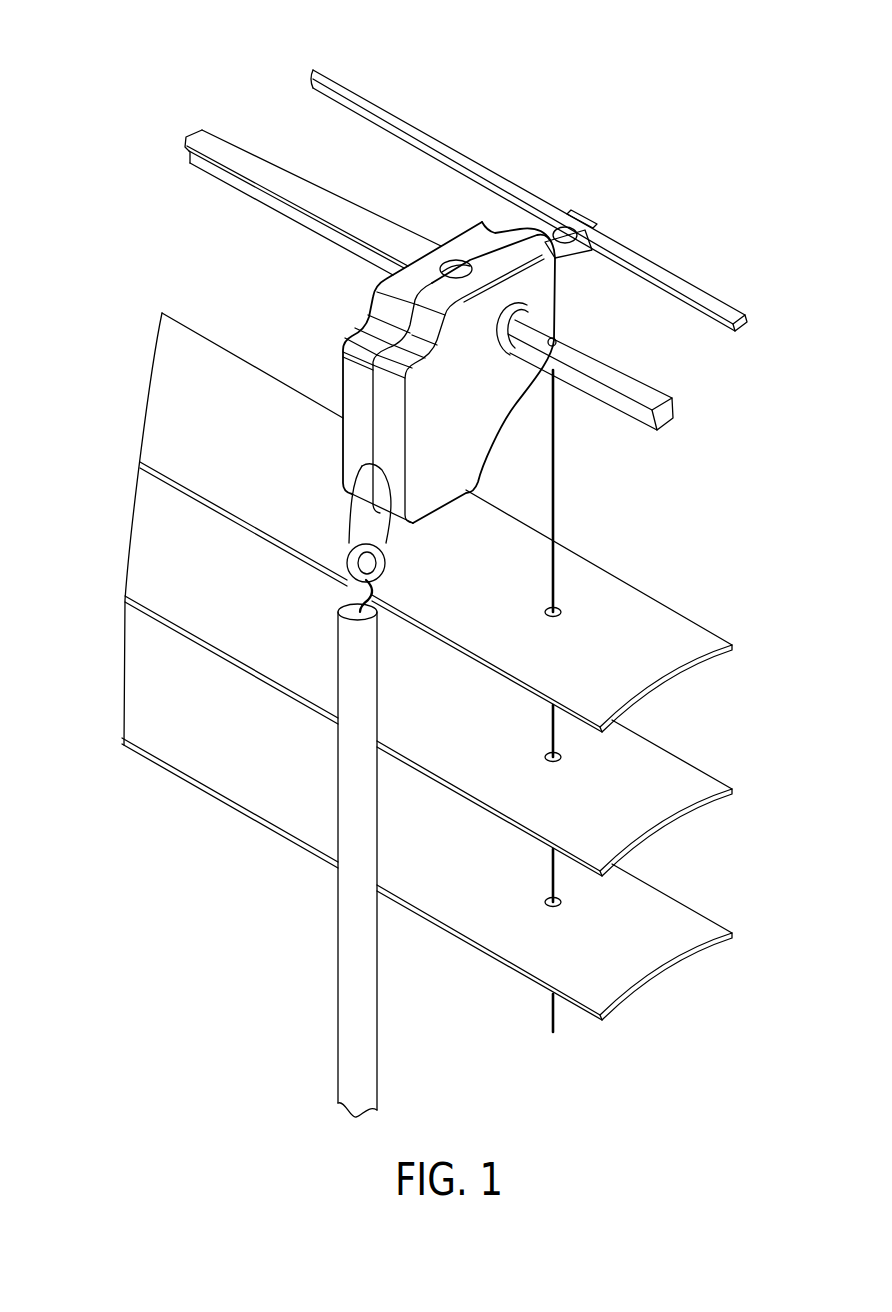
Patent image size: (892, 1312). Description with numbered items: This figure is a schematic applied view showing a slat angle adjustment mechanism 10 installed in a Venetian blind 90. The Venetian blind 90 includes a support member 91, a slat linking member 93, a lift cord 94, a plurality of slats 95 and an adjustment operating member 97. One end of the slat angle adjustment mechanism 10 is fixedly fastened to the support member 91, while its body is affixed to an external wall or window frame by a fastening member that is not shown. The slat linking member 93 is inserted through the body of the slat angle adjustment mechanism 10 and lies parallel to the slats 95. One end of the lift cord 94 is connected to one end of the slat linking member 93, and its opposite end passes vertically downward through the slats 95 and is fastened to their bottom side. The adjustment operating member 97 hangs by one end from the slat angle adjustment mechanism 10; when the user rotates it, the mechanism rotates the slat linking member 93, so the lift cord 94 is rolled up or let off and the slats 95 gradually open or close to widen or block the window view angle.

The Venetian blind 90 is at (140, 100).
The slat angle adjustment mechanism 10 is at (463, 223).
The support member 91 is at (703, 290).
The slat linking member 93 is at (670, 412).
The lift cord 94 is at (558, 483).
The slats 95 is at (677, 635).
The adjustment operating member 97 is at (365, 1023).